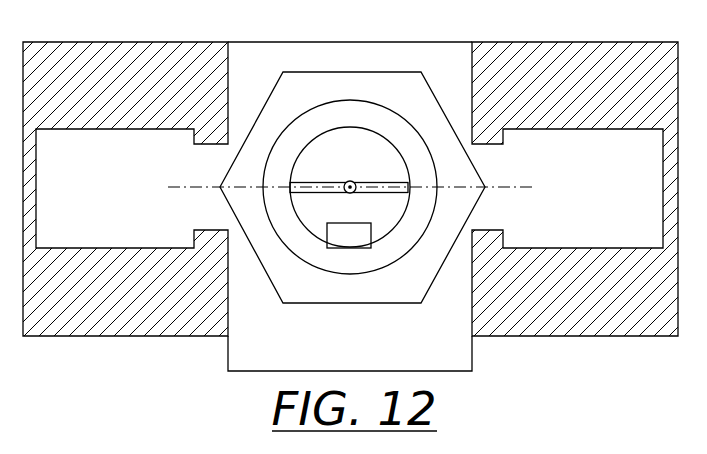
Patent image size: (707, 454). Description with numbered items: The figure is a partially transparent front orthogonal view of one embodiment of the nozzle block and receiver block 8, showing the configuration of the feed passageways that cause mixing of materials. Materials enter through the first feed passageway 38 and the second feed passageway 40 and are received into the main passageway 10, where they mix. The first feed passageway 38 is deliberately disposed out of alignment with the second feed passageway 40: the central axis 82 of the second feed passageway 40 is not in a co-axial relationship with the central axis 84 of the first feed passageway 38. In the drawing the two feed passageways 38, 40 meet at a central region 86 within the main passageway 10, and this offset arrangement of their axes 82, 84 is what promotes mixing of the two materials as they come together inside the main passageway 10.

The valve housing flow passage 8 is at (382, 213).
The main passageway 10 is at (352, 153).
The first feed passageway 38 is at (395, 98).
The second feed passageway 40 is at (316, 98).
The central axis of feed passageway 40 82 is at (125, 170).
The central axis of feed passageway 38 84 is at (575, 170).
The pivot shaft 86 is at (372, 98).